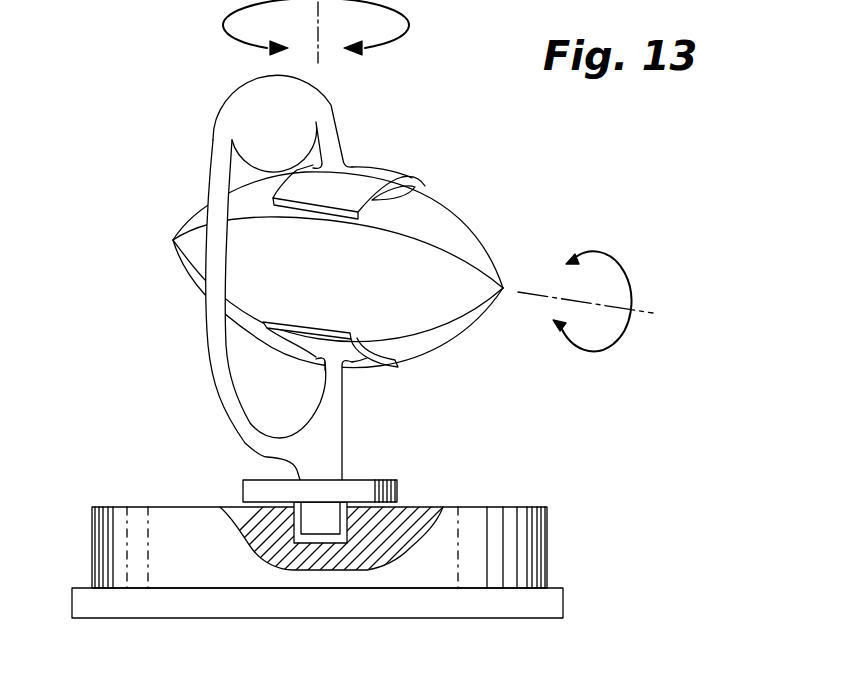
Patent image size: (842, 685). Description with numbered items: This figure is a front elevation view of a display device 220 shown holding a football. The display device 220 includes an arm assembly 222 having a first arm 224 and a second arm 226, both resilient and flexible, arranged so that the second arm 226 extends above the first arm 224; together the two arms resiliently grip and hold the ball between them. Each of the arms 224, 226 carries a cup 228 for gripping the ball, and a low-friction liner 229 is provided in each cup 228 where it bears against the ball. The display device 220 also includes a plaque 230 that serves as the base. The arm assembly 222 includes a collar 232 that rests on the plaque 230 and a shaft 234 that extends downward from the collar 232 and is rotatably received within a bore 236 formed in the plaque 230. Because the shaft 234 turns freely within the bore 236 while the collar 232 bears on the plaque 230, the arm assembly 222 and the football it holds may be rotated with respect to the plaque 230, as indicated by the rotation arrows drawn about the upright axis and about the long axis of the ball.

The display device 220 is at (551, 491).
The arm assembly 222 is at (203, 140).
The first arm 224 is at (333, 395).
The second arm 226 is at (217, 386).
The cup 228 is at (365, 177).
The low-friction liner 229 is at (413, 190).
The plaque 230 is at (547, 553).
The collar 232 is at (362, 487).
The shaft 234 is at (328, 517).
The bore 236 is at (310, 560).